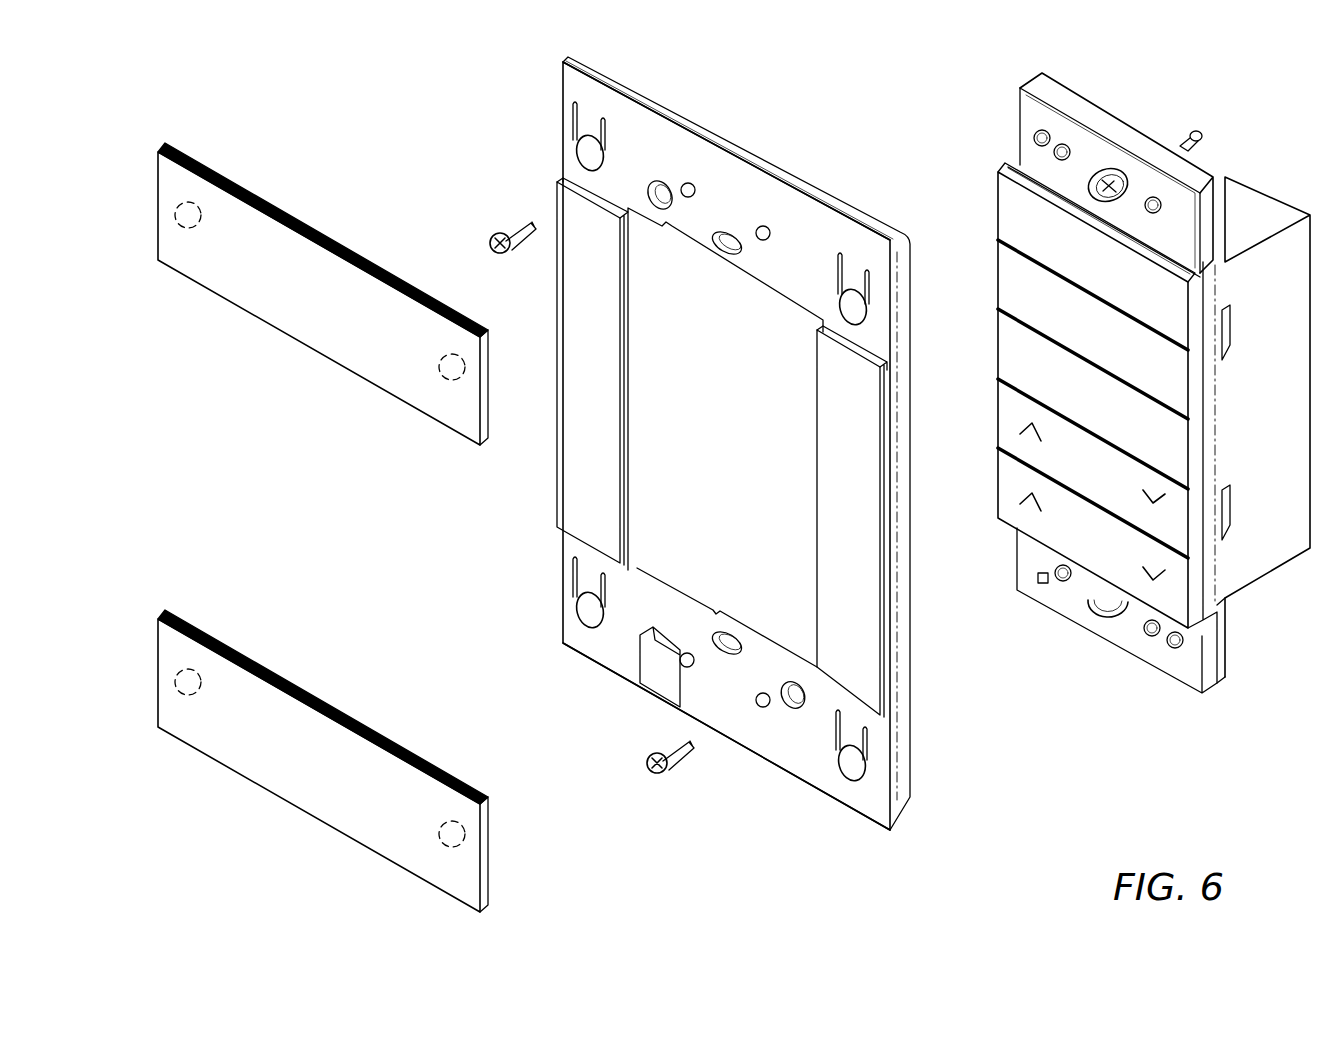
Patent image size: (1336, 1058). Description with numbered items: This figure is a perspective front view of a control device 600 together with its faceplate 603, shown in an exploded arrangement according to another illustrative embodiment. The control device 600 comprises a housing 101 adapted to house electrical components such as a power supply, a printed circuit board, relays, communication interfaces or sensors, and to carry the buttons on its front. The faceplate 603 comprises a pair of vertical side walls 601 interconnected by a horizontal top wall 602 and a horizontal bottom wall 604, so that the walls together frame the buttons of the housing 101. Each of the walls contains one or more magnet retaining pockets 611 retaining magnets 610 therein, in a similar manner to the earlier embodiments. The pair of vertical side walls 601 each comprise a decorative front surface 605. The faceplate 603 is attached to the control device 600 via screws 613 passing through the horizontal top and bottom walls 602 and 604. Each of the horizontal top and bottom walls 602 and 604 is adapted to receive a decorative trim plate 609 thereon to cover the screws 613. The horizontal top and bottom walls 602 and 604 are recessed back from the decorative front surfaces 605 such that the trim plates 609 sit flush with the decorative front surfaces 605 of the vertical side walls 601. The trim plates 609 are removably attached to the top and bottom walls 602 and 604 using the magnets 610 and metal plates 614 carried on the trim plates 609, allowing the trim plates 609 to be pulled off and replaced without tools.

The control device 600 is at (1208, 84).
The housing 101 is at (1258, 207).
The vertical side walls 601 is at (817, 425).
The horizontal top wall 602 is at (798, 212).
The faceplate 603 is at (718, 128).
The horizontal bottom wall 604 is at (770, 748).
The decorative front surface 605 is at (572, 475).
The decorative trim plate 609 is at (300, 315).
The magnets 610 is at (586, 152).
The magnet retaining pockets 611 is at (577, 114).
The screws 613 is at (497, 232).
The metal plates 614 is at (196, 220).